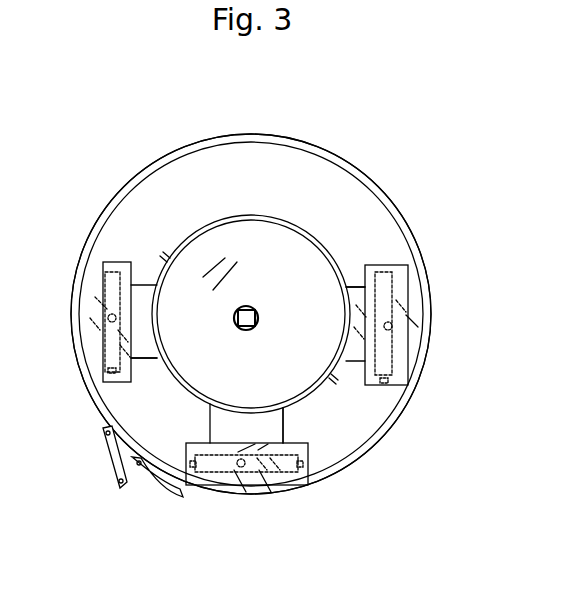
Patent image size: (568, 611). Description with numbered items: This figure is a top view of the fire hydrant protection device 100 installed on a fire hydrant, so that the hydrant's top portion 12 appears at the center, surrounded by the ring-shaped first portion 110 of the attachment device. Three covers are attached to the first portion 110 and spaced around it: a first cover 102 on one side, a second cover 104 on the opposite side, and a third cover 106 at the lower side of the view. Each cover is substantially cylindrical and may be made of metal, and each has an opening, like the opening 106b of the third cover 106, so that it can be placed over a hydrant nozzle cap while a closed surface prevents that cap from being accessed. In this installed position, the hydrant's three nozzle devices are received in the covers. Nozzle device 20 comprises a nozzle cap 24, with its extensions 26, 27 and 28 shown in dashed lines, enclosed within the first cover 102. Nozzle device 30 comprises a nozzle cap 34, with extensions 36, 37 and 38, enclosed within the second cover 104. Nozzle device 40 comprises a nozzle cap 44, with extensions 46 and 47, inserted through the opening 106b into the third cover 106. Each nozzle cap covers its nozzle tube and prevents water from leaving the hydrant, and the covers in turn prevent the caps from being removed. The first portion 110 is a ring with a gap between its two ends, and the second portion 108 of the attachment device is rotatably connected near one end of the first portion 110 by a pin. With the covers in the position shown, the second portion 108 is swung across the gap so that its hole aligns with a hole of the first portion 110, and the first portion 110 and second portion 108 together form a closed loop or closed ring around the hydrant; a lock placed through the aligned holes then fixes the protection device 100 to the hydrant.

The fire hydrant protection device 100 is at (360, 131).
The first portion 110 is at (222, 142).
The top portion 12 is at (298, 203).
The first cover 102 is at (123, 258).
The extension 26 is at (116, 269).
The extension 28 is at (108, 318).
The nozzle cap 24 is at (112, 335).
The extension 27 is at (110, 372).
The nozzle device 20 is at (139, 374).
The second cover 104 is at (370, 263).
The nozzle device 30 is at (355, 268).
The extension 36 is at (378, 272).
The extension 38 is at (390, 323).
The nozzle cap 34 is at (388, 330).
The extension 37 is at (385, 384).
The third cover 106 is at (300, 456).
The opening 106b is at (192, 443).
The nozzle device 40 is at (301, 428).
The extension 46 is at (193, 466).
The nozzle cap 44 is at (270, 484).
The extension 47 is at (305, 468).
The second portion 108 is at (116, 473).